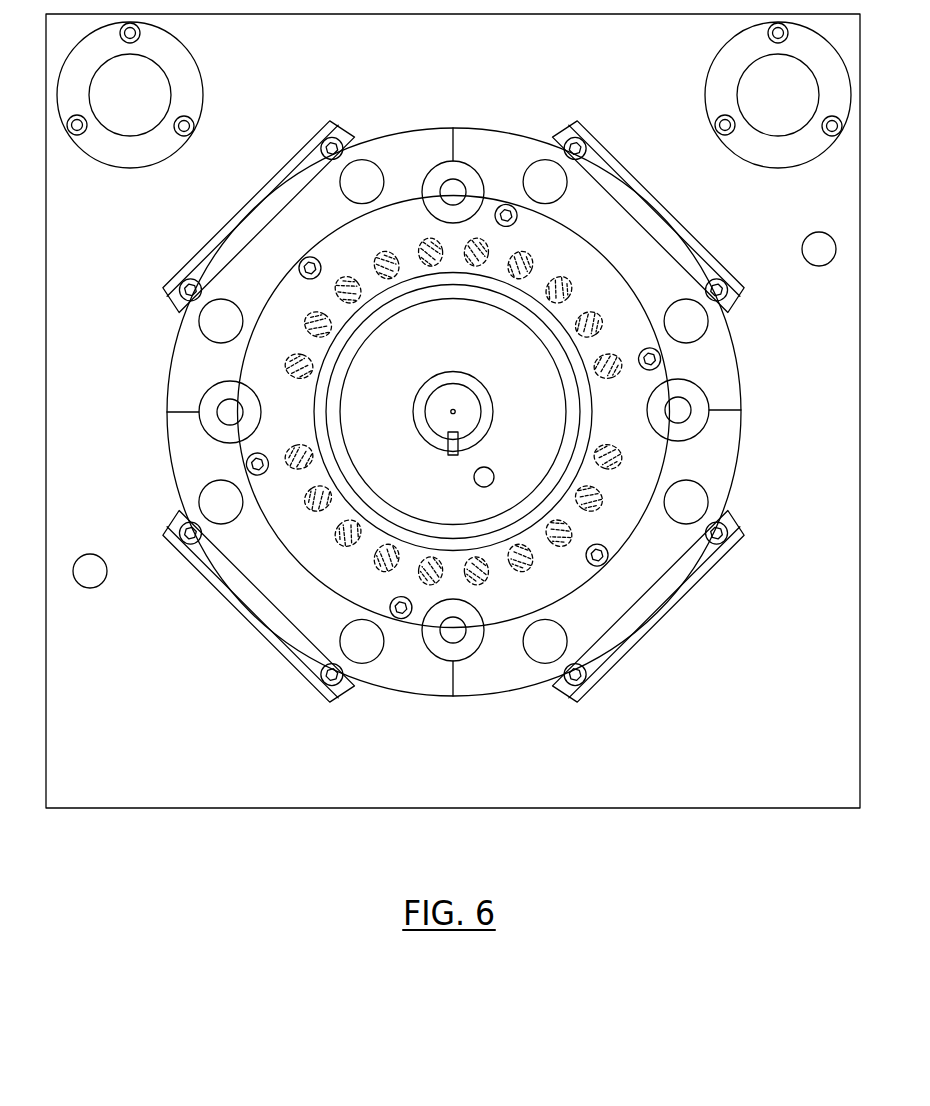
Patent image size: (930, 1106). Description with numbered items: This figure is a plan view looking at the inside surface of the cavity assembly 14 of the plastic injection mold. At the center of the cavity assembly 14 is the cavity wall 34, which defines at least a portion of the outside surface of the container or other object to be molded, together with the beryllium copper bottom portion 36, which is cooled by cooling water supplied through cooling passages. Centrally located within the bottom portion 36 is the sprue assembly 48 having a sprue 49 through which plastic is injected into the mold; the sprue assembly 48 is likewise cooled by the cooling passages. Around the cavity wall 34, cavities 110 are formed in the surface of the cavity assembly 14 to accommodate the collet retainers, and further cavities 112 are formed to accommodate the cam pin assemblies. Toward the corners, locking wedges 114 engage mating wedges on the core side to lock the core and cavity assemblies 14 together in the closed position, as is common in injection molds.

The cavity assembly 14 is at (44, 636).
The cavity wall 34 is at (363, 493).
The bottom portion 36 is at (441, 351).
The sprue assembly 48 is at (438, 413).
The sprue 49 is at (455, 411).
The cavities 110 is at (453, 161).
The cavities 112 is at (371, 175).
The locking wedges 114 is at (257, 198).